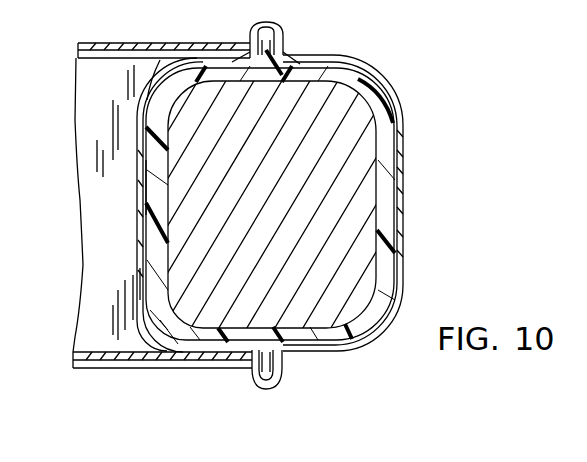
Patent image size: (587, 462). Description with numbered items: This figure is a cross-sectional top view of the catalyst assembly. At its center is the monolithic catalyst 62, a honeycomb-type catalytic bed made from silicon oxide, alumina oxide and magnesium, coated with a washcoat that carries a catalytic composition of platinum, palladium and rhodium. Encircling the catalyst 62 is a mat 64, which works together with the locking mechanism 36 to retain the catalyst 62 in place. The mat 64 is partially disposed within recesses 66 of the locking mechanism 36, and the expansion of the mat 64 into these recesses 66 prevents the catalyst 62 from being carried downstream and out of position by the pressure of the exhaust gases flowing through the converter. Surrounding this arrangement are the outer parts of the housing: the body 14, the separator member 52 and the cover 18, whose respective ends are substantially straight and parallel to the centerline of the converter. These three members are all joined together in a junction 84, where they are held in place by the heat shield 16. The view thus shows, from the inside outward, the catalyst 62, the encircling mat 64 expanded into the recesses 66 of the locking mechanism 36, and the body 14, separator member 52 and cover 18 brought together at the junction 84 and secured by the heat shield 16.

The body 14 is at (320, 62).
The heat shield 16 is at (145, 43).
The cover 18 is at (88, 60).
The locking mechanism 36 is at (404, 223).
The separator member 52 is at (160, 96).
The monolithic catalyst 62 is at (341, 134).
The mat 64 is at (394, 165).
The recesses 66 is at (144, 196).
The junction 84 is at (282, 27).